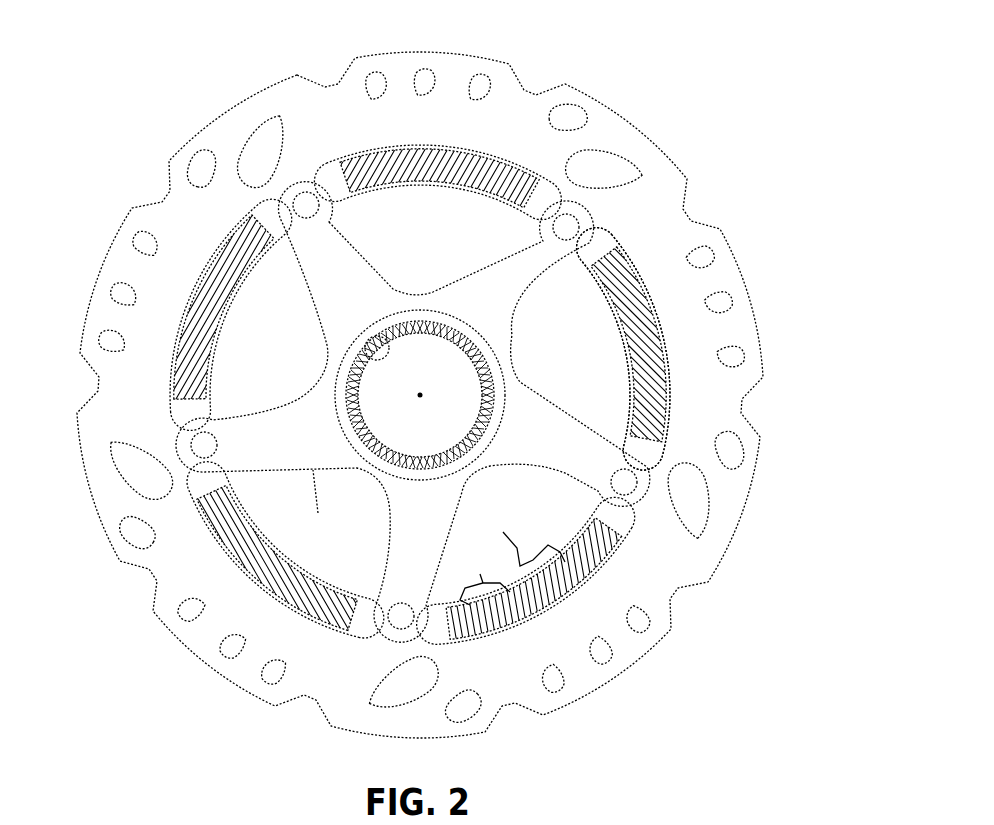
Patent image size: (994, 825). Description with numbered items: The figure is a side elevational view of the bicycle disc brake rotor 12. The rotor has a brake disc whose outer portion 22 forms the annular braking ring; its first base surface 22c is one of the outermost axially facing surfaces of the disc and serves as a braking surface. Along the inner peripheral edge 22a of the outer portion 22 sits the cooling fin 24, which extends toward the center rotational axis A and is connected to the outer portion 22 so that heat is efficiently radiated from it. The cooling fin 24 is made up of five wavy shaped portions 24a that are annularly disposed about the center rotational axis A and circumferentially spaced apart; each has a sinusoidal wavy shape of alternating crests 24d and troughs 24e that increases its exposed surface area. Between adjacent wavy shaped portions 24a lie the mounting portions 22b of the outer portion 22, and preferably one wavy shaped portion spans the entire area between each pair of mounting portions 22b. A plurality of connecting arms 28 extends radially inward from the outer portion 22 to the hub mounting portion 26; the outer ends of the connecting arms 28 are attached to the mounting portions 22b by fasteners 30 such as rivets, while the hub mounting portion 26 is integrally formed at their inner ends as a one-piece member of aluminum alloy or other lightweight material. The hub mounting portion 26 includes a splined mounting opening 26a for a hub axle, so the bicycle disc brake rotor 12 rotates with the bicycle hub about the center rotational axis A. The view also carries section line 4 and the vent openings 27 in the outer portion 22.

The bicycle disc brake rotor 12 is at (650, 67).
The outer portion 22 is at (672, 161).
The inner peripheral edge 22a is at (615, 397).
The mounting portions 22b is at (283, 232).
The first base surface 22c is at (700, 558).
The cooling fin 24 is at (665, 335).
The wavy shaped portions 24a is at (378, 170).
The crests 24d is at (518, 538).
The troughs 24e is at (482, 579).
The hub mounting portion 26 is at (525, 366).
The mounting opening 26a is at (368, 339).
The vent holes 27 is at (150, 540).
The connecting arms 28 is at (390, 523).
The fasteners 30 is at (305, 200).
The section line 4- 4 is at (394, 46).
The center rotational axis A is at (422, 393).